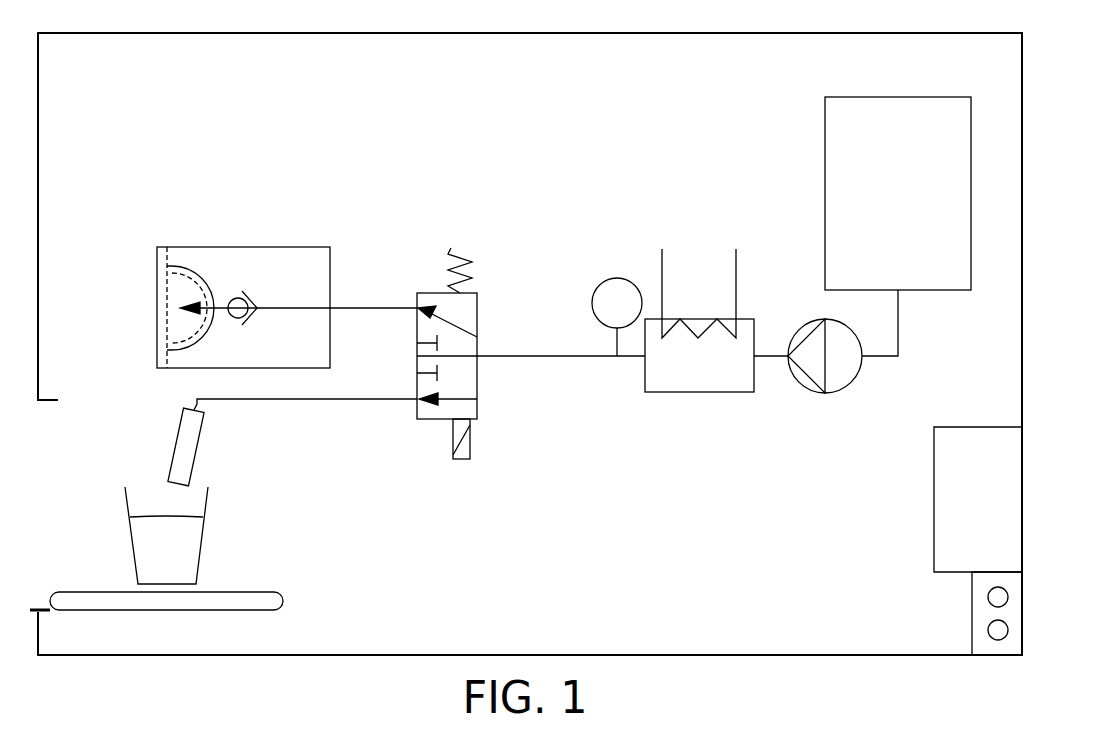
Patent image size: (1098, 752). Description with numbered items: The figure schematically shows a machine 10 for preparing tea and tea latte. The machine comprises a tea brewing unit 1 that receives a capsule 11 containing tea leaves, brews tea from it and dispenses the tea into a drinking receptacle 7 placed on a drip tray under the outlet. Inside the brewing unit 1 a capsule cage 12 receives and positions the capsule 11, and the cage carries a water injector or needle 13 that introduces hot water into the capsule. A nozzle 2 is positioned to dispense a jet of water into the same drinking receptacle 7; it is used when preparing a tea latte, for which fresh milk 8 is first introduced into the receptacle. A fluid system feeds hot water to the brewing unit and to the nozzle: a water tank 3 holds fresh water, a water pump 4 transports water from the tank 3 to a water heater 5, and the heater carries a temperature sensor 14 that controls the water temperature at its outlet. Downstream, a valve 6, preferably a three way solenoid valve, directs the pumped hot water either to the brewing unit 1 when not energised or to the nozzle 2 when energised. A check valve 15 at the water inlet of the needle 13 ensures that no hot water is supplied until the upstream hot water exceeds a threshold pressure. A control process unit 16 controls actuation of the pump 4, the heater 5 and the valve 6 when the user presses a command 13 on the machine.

The tea brewing unit 1 is at (330, 258).
The nozzle 2 is at (176, 437).
The water tank 3 is at (825, 123).
The water pump 4 is at (823, 393).
The water heater 5 is at (700, 392).
The valve 6 is at (477, 309).
The drinking receptacle 7 is at (128, 533).
The fresh milk 8 is at (192, 533).
The machine 10 is at (1022, 55).
The capsule 11 is at (193, 268).
The capsule cage 12 is at (210, 292).
The water injector or needle / command 13 is at (205, 322).
The temperature sensor 14 is at (618, 278).
The check valve 15 is at (252, 318).
The control process unit 16 is at (934, 487).